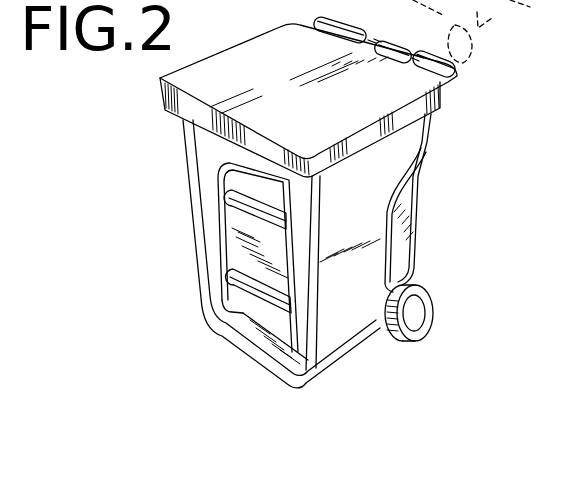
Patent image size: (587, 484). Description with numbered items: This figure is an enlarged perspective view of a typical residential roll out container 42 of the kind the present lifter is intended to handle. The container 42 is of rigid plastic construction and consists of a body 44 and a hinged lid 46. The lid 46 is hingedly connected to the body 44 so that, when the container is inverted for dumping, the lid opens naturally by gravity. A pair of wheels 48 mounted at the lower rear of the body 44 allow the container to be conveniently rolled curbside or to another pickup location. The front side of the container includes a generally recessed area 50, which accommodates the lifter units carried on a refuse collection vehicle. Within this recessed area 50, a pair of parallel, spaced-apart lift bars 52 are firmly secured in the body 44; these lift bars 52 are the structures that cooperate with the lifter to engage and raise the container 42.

The roll out container 42 is at (137, 146).
The body 44 is at (398, 160).
The hinged lid 46 is at (408, 87).
The wheels 48 is at (418, 310).
The recessed area 50 is at (257, 247).
The lift bars 52 is at (236, 199).